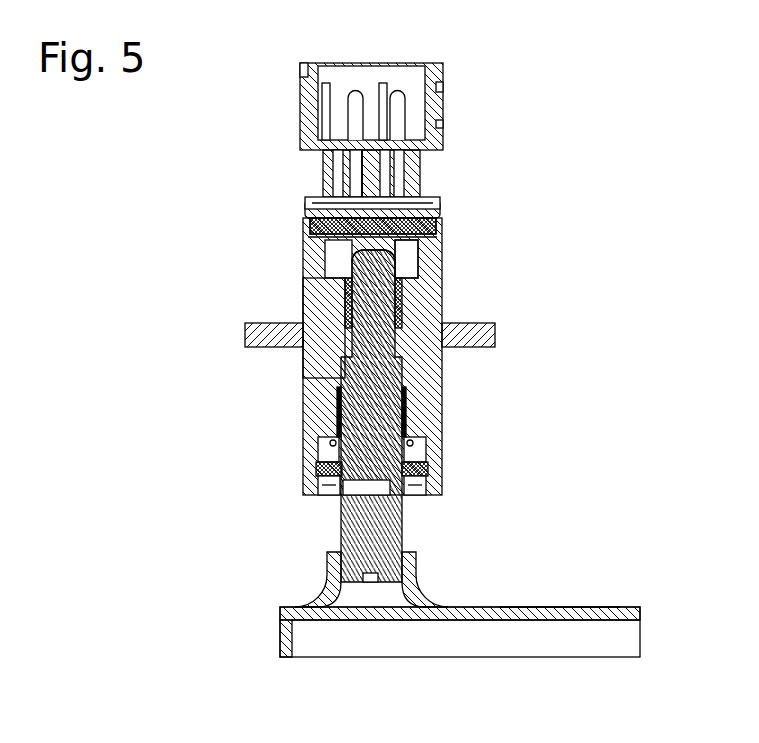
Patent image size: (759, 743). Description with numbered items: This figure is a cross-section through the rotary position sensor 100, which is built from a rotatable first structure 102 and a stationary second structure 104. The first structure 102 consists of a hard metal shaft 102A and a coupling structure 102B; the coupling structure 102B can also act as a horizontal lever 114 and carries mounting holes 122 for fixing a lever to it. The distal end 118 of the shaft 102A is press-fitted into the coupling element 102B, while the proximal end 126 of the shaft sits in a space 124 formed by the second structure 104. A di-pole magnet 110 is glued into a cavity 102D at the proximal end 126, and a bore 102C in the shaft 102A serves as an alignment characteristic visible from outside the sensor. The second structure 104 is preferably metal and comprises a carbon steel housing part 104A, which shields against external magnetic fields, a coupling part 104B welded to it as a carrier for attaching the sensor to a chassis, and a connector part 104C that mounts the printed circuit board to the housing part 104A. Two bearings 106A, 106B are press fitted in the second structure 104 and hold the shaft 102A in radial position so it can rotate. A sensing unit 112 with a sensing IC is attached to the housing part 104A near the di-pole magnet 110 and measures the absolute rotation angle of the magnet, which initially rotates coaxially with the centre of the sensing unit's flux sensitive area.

The rotary position sensor 100 is at (572, 248).
The first structure 102 is at (327, 535).
The shaft 102A is at (405, 524).
The coupling structure 102B is at (568, 612).
The bore 102C is at (360, 493).
The cavity 102D is at (355, 258).
The second structure 104 is at (298, 241).
The housing part 104A is at (312, 308).
The coupling part 104B is at (246, 335).
The connector part 104C is at (443, 112).
The bearing 106A is at (404, 300).
The bearing 106B is at (406, 402).
The di-pole magnet 110 is at (425, 258).
The sensing unit 112 is at (372, 210).
The lever 114 is at (542, 612).
The distal end 118 is at (389, 582).
The mounting holes 122 is at (512, 612).
The space 124 is at (418, 270).
The proximal end 126 is at (347, 298).